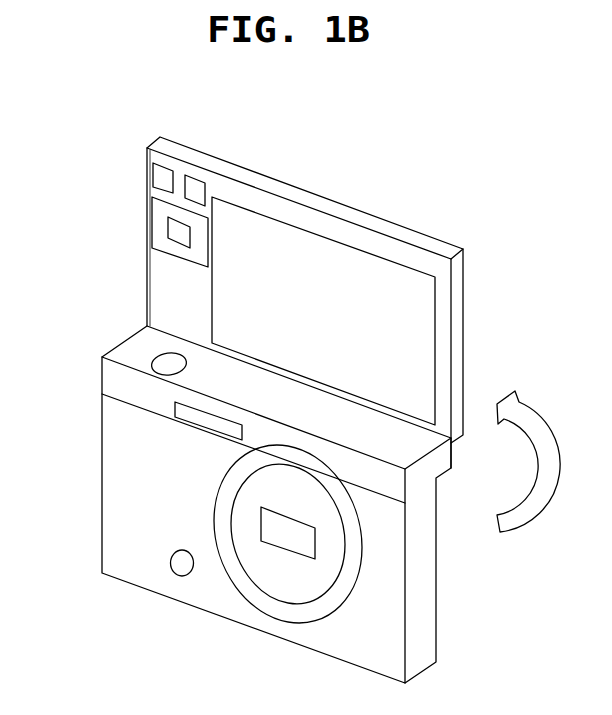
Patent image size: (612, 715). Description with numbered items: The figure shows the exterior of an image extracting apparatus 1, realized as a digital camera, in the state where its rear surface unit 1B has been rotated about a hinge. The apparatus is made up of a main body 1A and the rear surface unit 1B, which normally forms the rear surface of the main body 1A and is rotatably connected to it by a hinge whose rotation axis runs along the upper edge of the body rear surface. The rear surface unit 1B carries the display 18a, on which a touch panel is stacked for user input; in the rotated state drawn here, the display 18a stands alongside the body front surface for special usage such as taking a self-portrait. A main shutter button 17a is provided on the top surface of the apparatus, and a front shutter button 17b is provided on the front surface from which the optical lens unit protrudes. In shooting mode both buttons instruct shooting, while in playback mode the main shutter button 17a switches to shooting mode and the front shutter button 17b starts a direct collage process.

The image extracting apparatus 1 is at (295, 389).
The main body 1A is at (267, 504).
The rear surface unit 1B is at (314, 302).
The main shutter button 17a is at (172, 365).
The front shutter button 17b is at (181, 562).
The display 18a is at (233, 302).